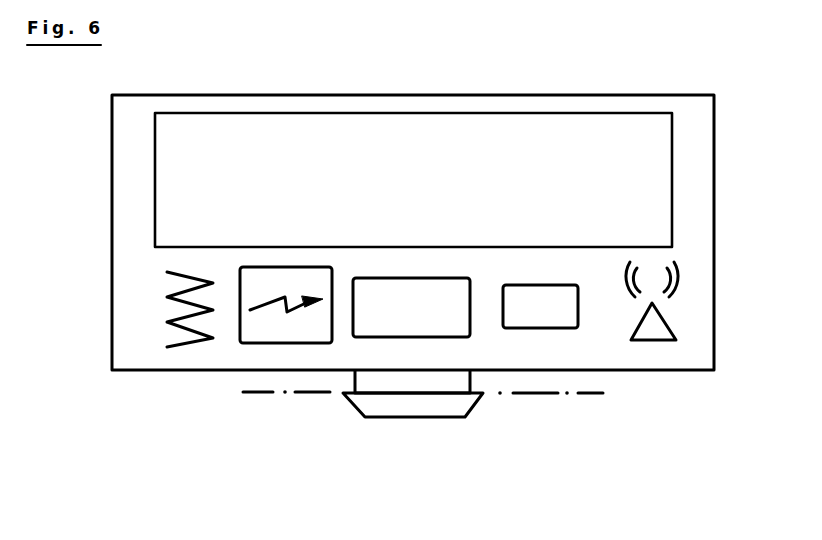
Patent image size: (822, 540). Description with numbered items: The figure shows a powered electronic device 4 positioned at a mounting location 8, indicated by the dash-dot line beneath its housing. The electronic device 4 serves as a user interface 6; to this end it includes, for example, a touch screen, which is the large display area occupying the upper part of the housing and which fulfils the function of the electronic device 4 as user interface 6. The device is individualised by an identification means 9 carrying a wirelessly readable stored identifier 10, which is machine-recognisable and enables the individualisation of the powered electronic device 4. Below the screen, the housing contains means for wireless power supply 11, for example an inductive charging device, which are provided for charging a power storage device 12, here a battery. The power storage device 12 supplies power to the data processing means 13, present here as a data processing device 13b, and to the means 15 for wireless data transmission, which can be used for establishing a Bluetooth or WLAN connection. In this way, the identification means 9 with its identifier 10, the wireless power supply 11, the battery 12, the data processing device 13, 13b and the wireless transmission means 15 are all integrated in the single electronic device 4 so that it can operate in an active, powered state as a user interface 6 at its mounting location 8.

The electronic device 4 is at (505, 78).
The user interface 6 is at (358, 155).
The mounting location 8 is at (318, 380).
The identification means 9 is at (540, 378).
The identifier 10 is at (538, 322).
The means for wireless power supply 11 is at (185, 333).
The power storage device 12 is at (284, 331).
The data processing means 13 is at (413, 394).
The data processing device 13b is at (412, 312).
The means for wireless data transmission 15 is at (652, 327).